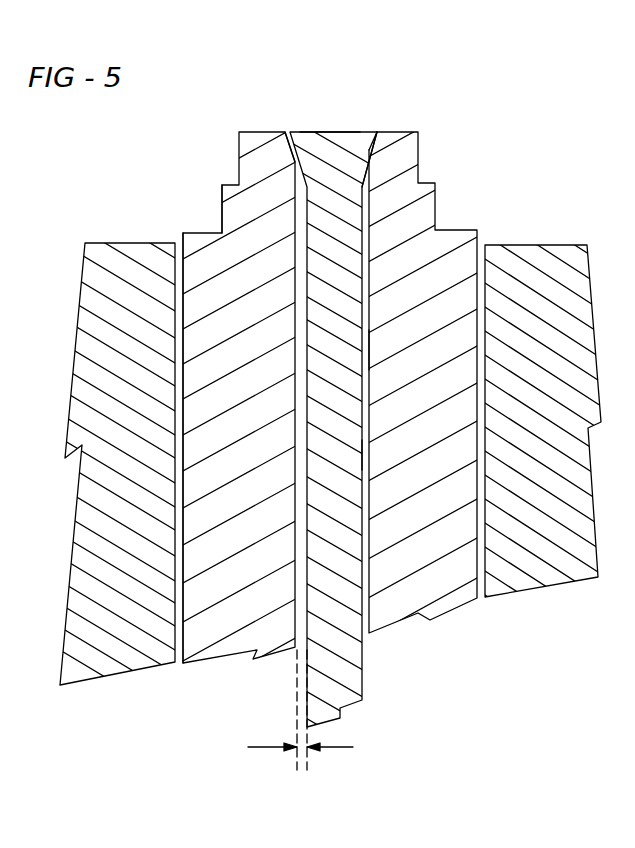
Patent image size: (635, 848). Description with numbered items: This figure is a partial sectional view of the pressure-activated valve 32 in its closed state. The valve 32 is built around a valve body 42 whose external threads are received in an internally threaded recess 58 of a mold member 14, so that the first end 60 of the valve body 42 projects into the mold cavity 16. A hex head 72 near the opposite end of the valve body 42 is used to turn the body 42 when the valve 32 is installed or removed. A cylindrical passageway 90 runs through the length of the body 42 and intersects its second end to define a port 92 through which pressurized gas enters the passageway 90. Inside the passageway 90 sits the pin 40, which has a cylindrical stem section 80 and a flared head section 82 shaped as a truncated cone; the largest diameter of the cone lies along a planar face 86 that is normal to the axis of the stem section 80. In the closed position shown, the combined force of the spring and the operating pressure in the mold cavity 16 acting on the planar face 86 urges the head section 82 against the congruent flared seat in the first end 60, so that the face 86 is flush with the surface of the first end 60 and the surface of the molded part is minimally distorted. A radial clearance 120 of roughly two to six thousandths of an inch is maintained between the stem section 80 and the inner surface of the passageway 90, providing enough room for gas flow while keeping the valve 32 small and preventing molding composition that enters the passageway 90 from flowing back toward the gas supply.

The second mold member 14 is at (527, 250).
The mold cavity 16 is at (524, 124).
The pressure-activated valve 32 is at (221, 165).
The pin 40 is at (337, 403).
The valve body 42 is at (202, 410).
The internally threaded recess 58 is at (176, 250).
The first end of the valve body 60 is at (373, 131).
The hex head 72 is at (221, 206).
The stem section 80 is at (345, 460).
The head section 82 is at (358, 152).
The planar face 86 is at (337, 131).
The cylindrical passageway 90 is at (372, 356).
The port 92 is at (283, 140).
The radial clearance 120 is at (263, 747).